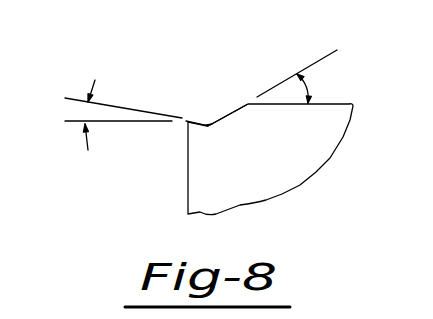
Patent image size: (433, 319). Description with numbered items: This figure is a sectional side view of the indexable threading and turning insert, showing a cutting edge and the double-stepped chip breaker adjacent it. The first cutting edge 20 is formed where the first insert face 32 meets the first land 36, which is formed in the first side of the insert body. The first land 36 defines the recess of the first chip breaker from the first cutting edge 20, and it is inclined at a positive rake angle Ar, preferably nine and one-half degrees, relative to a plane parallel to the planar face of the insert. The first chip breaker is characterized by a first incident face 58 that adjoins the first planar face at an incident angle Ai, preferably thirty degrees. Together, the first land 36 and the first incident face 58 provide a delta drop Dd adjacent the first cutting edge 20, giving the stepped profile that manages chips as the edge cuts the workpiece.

The first cutting edge 20 is at (183, 117).
The first insert face 32 is at (186, 180).
The first land 36 is at (208, 123).
The first incident face 58 is at (233, 108).
The delta drop Dd is at (223, 95).
The positive rake angle Ar is at (68, 107).
The incident angle Ai is at (305, 89).